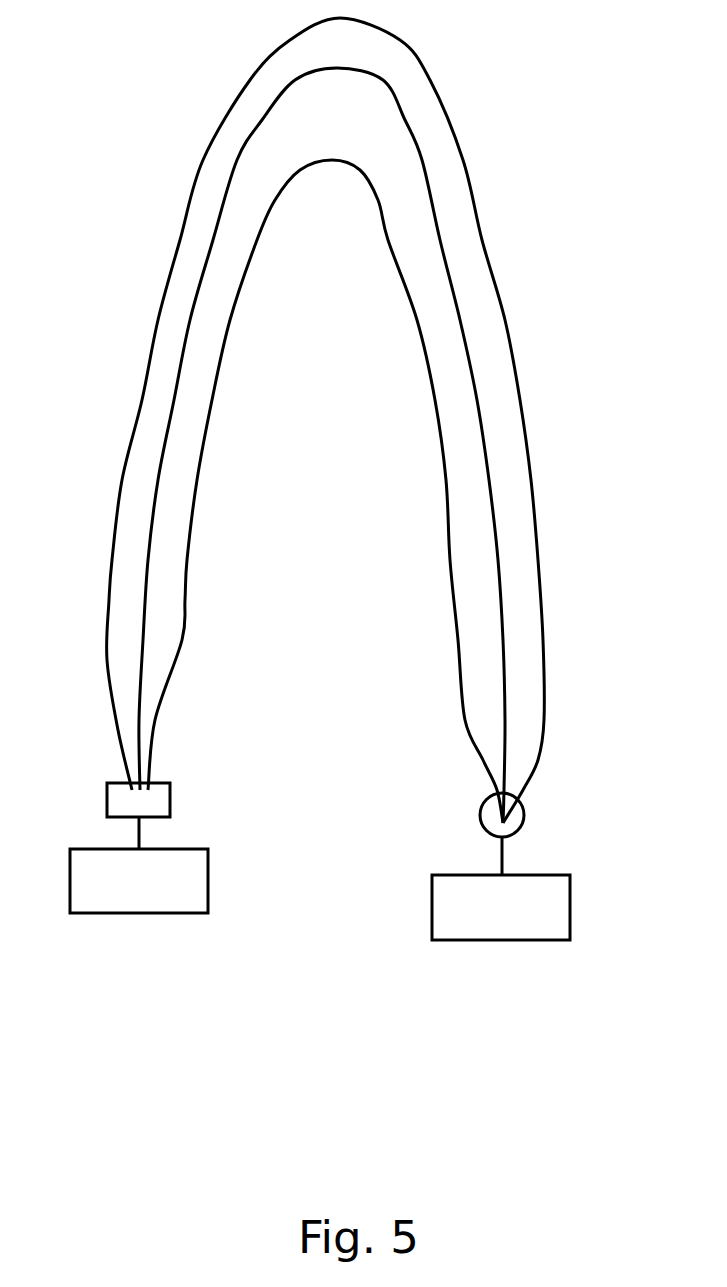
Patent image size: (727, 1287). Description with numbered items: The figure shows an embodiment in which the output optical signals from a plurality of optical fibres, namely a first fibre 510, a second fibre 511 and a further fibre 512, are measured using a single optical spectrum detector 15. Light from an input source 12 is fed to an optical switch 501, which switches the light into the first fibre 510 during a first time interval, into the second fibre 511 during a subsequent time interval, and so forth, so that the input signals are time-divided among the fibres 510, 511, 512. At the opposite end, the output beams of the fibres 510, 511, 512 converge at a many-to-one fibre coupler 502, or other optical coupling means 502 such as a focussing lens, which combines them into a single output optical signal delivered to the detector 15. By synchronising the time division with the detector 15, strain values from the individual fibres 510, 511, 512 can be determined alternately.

The first fibre 510 is at (215, 405).
The second fibre 511 is at (173, 423).
The optical fibre 512 is at (130, 458).
The optical switch 501 is at (177, 805).
The N:1 fibre coupler 502 is at (525, 823).
The input source 12 is at (175, 918).
The optical spectrum detector 15 is at (540, 942).